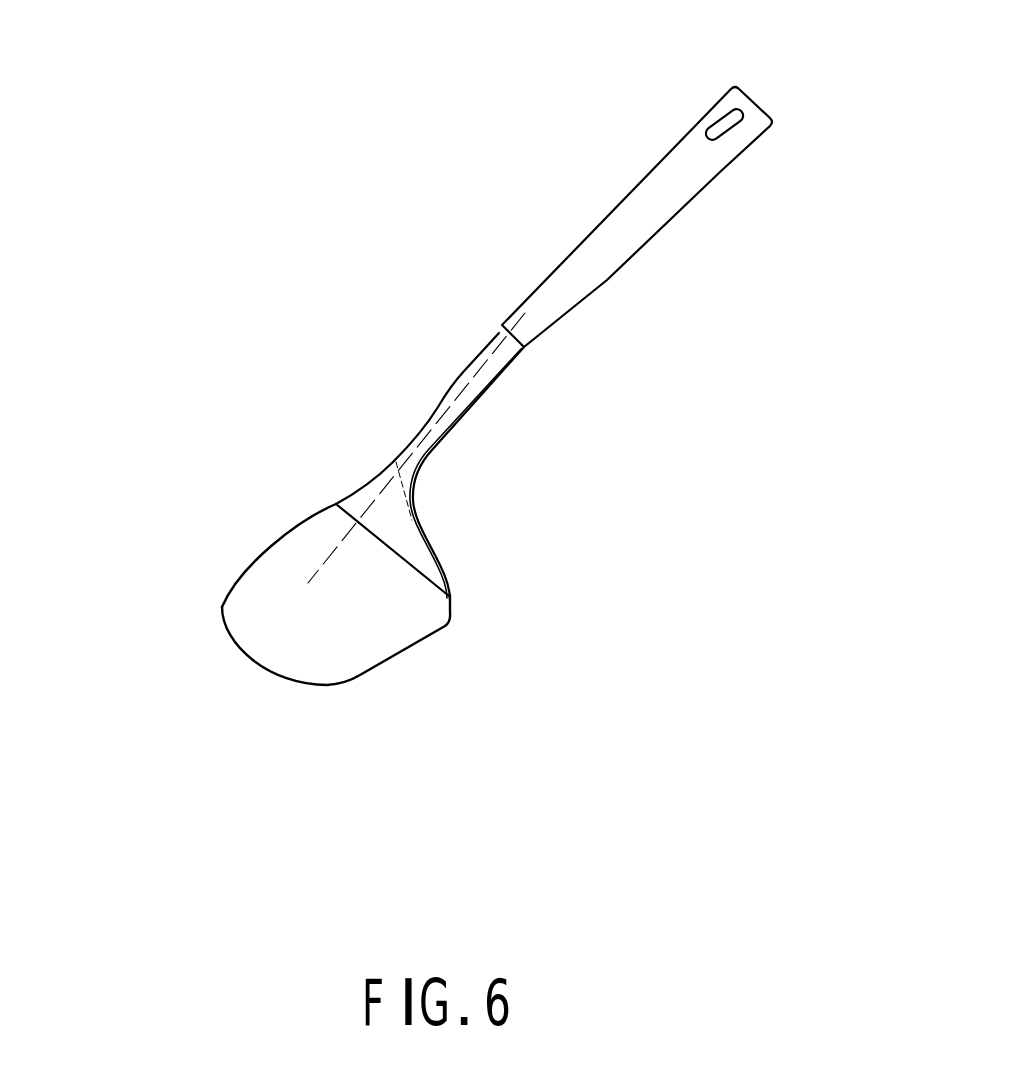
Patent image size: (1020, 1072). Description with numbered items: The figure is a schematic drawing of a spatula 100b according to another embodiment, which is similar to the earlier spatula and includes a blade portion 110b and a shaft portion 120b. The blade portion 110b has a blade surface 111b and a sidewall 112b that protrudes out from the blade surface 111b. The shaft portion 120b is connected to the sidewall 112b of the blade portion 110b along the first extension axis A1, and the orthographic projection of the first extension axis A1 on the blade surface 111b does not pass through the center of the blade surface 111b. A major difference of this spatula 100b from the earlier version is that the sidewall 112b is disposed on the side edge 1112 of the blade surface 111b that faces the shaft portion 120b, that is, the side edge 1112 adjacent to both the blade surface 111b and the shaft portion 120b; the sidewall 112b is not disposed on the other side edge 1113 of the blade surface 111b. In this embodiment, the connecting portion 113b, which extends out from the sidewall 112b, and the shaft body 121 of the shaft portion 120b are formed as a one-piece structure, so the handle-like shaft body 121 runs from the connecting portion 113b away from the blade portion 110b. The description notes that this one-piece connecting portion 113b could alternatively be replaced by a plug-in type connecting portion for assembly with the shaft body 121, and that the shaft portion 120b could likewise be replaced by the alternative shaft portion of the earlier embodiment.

The spatula 100b is at (197, 112).
The shaft portion 120b is at (555, 215).
The shaft body 121 is at (465, 406).
The blade portion 110b is at (250, 513).
The blade surface 111b is at (226, 583).
The side edge 1113 is at (274, 561).
The side edge 1112 is at (415, 582).
The sidewall 112b is at (430, 545).
The connecting portion 113b is at (381, 459).
The first extension axis A1 is at (488, 347).